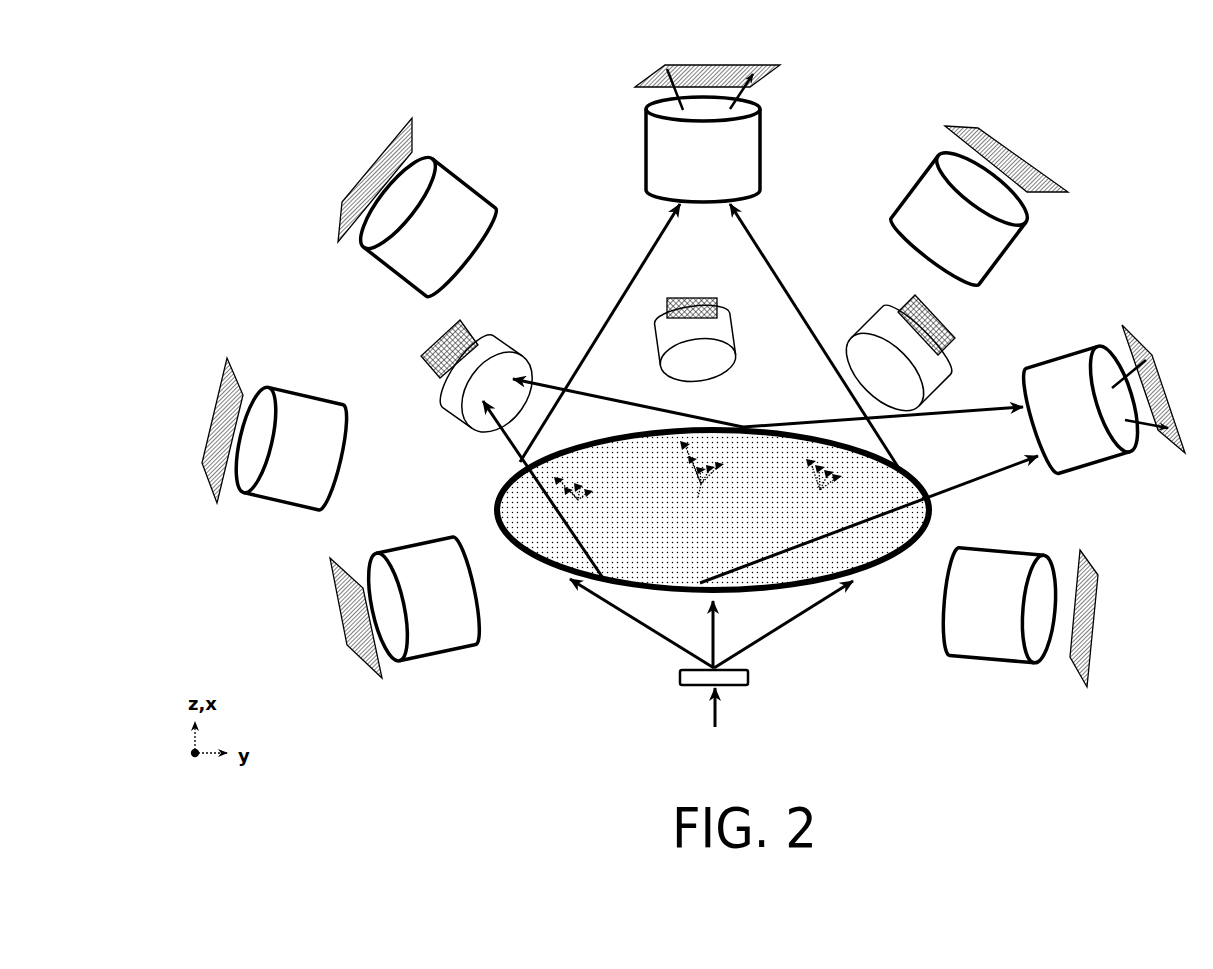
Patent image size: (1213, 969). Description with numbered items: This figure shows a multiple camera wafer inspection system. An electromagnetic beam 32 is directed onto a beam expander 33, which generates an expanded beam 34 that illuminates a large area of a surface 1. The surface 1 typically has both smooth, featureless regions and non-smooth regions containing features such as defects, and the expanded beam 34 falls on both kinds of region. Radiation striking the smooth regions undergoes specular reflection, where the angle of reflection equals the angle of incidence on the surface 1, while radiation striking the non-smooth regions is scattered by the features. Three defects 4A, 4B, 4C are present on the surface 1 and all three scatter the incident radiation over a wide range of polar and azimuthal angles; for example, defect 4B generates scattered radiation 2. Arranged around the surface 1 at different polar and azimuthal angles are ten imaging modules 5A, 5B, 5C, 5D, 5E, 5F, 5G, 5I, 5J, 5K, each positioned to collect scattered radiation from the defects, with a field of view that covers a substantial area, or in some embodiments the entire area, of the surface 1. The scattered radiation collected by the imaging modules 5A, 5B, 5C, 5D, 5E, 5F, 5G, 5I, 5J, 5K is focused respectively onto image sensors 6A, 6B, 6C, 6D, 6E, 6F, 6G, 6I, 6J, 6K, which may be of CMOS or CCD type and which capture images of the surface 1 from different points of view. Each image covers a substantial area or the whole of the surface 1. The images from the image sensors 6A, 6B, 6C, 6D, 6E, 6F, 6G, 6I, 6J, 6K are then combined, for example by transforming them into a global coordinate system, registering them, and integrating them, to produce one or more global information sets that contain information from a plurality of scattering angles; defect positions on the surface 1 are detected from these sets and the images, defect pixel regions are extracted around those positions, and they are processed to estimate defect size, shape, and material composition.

The surface 1 is at (882, 574).
The scattered radiation 2 is at (712, 477).
The defect 4A is at (578, 500).
The defect 4B is at (701, 484).
The defect 4C is at (820, 490).
The imaging module 5A is at (405, 548).
The imaging module 5B is at (300, 388).
The imaging module 5C is at (455, 173).
The imaging module 5D is at (762, 140).
The imaging module 5E is at (1016, 242).
The imaging module 5F is at (1103, 463).
The imaging module 5G is at (990, 663).
The imaging module 5I is at (925, 378).
The imaging module 5J is at (735, 340).
The imaging module 5K is at (500, 342).
The image sensor 6A is at (335, 560).
The image sensor 6B is at (228, 362).
The image sensor 6C is at (414, 120).
The image sensor 6D is at (772, 72).
The image sensor 6E is at (1065, 195).
The image sensor 6F is at (1178, 452).
The image sensor 6G is at (1082, 680).
The image sensor 6I is at (952, 350).
The image sensor 6J is at (717, 300).
The image sensor 6K is at (462, 322).
The electromagnetic beam 32 is at (715, 708).
The beam expander 33 is at (750, 672).
The expanded beam 34 is at (820, 608).